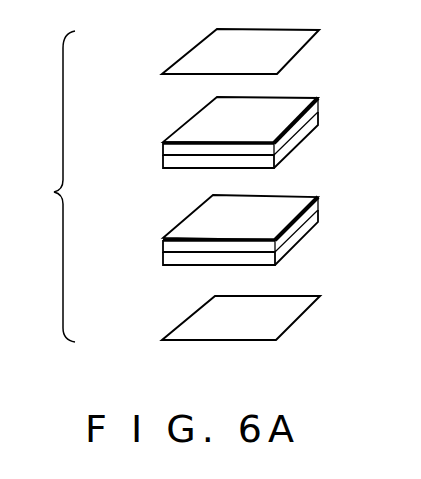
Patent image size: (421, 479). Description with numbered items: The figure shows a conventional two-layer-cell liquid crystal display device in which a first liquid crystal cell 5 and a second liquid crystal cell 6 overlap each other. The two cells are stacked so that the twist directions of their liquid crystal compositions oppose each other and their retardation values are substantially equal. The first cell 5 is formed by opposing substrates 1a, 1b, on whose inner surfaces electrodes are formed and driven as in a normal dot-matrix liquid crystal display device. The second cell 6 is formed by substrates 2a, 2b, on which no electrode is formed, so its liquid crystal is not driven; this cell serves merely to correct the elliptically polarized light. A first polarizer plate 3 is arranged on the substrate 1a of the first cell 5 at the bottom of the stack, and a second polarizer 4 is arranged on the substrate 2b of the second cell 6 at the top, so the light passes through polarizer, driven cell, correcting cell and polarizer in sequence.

The substrate 1a is at (166, 257).
The substrate 1b is at (166, 247).
The substrate 2a is at (166, 160).
The substrate 2b is at (166, 149).
The first polarizer plate 3 is at (195, 323).
The second polarizer 4 is at (189, 60).
The first liquid crystal cell 5 is at (203, 235).
The second liquid crystal cell 6 is at (203, 138).